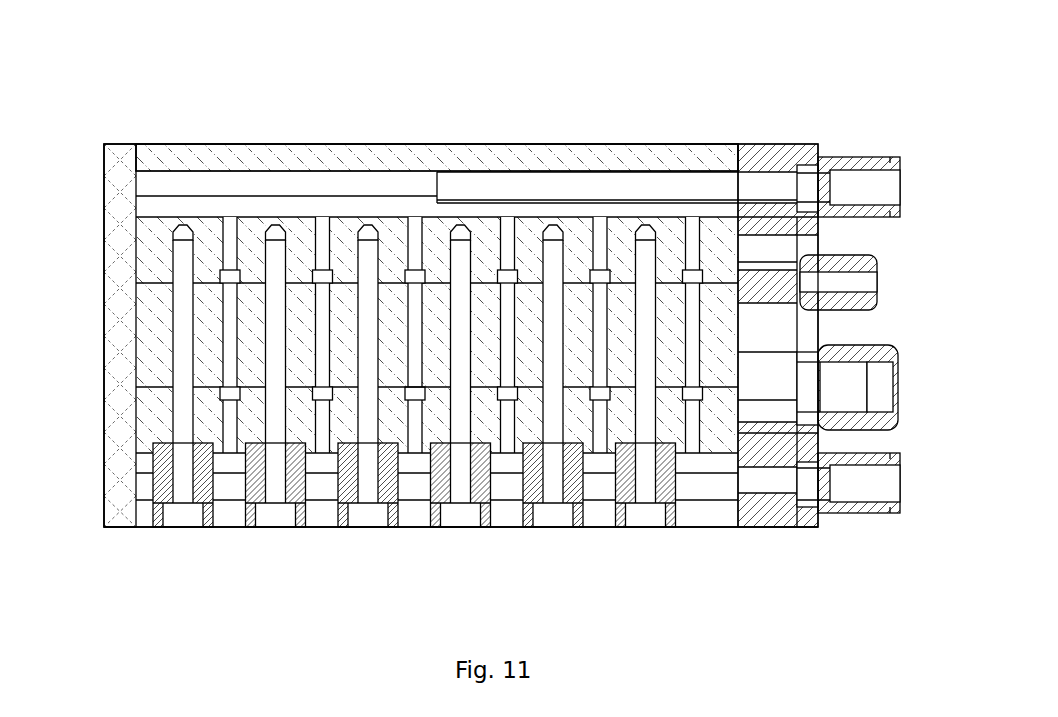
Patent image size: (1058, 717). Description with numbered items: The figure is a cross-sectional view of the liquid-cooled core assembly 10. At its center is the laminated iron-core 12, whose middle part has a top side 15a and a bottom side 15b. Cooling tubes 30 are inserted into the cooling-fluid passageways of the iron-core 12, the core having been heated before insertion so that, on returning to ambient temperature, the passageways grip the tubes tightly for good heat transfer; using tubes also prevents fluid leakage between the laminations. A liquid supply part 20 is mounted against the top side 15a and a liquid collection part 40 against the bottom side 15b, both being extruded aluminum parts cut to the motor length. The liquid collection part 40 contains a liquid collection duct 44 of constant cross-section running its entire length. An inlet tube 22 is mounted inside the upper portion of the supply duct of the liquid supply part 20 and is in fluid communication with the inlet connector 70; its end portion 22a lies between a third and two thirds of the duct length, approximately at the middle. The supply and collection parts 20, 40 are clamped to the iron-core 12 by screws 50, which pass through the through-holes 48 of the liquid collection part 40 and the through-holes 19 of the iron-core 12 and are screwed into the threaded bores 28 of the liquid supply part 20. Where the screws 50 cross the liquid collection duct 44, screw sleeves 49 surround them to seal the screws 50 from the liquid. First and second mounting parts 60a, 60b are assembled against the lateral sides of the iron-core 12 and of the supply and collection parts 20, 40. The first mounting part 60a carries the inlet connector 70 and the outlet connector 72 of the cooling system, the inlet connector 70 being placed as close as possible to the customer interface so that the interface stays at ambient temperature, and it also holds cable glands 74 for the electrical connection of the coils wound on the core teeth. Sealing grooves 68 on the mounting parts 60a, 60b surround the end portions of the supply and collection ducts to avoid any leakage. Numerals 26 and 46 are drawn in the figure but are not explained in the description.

The liquid-cooled core assembly 10 is at (196, 101).
The iron-core 12 is at (166, 310).
The top side 15a is at (401, 275).
The bottom side 15b is at (478, 388).
The through-holes 19 is at (263, 303).
The liquid supply part 20 is at (664, 133).
The inlet tube 22 is at (523, 188).
The end portion 22a is at (437, 173).
The upper spacer 26 is at (222, 243).
The threaded bores 28 is at (360, 267).
The cooling tubes 30 is at (221, 367).
The liquid collection part 40 is at (553, 551).
The liquid collection duct 44 is at (702, 490).
The holder block 46 is at (612, 412).
The through-holes 48 is at (380, 402).
The screw sleeves 49 is at (350, 485).
The screws 50 is at (185, 475).
The first mounting part 60a is at (764, 163).
The second mounting part 60b is at (122, 483).
The sealing grooves 68 is at (105, 147).
The inlet connector 70 is at (889, 137).
The outlet connector 72 is at (867, 533).
The cable glands 74 is at (886, 334).